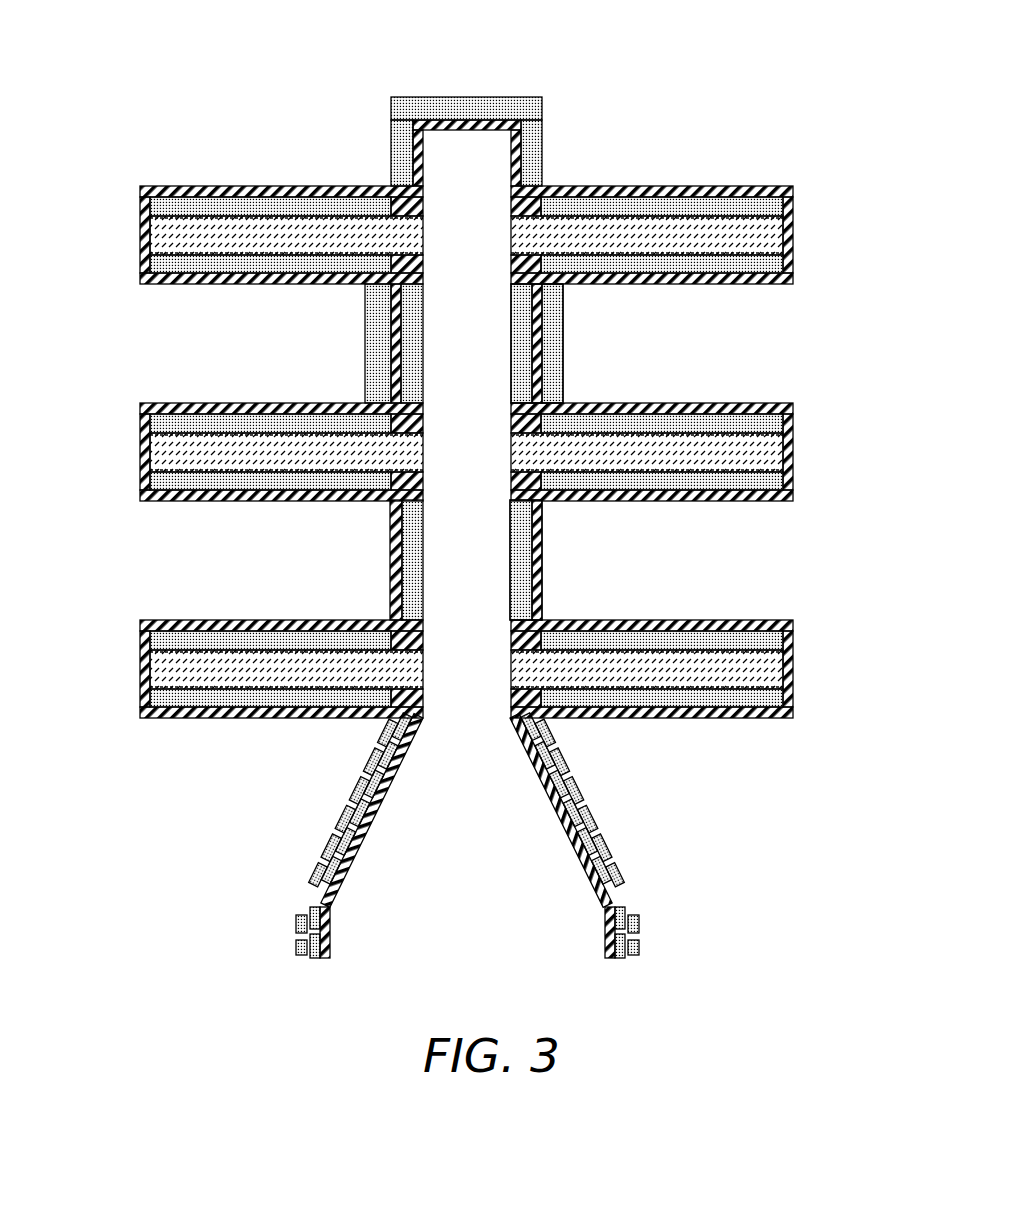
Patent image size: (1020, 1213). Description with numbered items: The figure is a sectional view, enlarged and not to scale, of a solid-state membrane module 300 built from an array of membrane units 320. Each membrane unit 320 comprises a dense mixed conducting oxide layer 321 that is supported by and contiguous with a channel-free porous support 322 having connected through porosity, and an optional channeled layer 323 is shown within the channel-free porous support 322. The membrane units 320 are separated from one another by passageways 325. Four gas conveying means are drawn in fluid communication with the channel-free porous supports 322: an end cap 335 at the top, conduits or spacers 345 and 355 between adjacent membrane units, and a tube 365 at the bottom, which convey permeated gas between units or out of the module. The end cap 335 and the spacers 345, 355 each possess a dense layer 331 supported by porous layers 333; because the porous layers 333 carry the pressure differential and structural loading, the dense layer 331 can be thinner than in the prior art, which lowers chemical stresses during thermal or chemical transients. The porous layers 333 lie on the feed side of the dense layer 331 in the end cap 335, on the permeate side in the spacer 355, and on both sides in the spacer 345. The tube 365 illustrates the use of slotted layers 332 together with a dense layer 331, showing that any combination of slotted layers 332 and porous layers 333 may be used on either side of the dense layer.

The solid-state membrane module 300 is at (457, 479).
The membrane unit 320 is at (457, 435).
The dense mixed conducting oxide layer 321 is at (781, 186).
The channel-free porous support 322 is at (772, 206).
The channeled layer 323 is at (772, 240).
The passageway 325 is at (751, 359).
The dense layer 331 is at (418, 142).
The slotted layer 332 is at (367, 768).
The porous layer 333 is at (415, 110).
The gas conveying means (end cap) 335 is at (423, 515).
The gas conveying means (conduit/spacer) 345 is at (575, 335).
The gas conveying means (conduit/spacer) 355 is at (568, 561).
The gas conveying means (tube) 365 is at (469, 833).